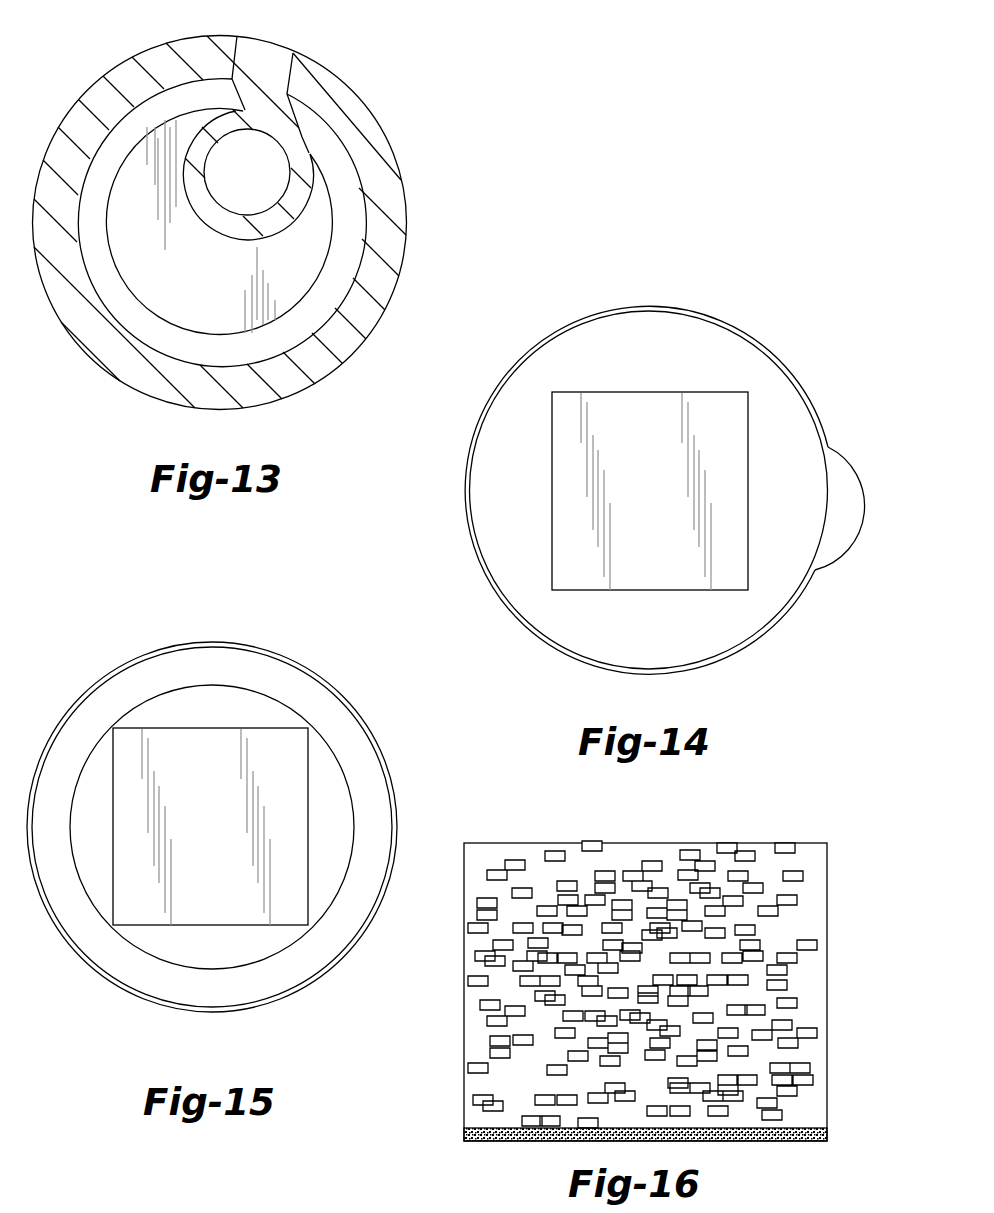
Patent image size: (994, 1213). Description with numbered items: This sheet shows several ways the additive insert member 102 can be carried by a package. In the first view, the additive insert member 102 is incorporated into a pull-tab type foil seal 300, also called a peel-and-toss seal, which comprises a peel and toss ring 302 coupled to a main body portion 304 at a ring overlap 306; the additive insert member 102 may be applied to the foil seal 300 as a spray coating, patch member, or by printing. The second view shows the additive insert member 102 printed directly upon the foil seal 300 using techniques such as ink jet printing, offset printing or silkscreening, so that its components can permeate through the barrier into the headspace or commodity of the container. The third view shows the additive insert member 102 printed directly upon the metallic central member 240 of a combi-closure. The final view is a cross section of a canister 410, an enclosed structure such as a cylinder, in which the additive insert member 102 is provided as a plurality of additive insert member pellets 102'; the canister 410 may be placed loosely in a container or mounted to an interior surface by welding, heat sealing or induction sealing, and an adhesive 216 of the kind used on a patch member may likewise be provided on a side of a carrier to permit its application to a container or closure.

In FIG. 13, the additive insert member 102 is at (292, 222).
In FIG. 14, the additive insert member 102 is at (650, 432).
In FIG. 15, the additive insert member 102 is at (210, 767).
In FIG. 16, the additive insert member pellets 102' is at (602, 992).
In FIG. 16, the adhesive 216 is at (512, 1137).
In FIG. 15, the metallic central member 240 is at (328, 682).
In FIG. 13, the pull-tab type foil seal 300 is at (381, 80).
In FIG. 14, the pull-tab type foil seal 300 is at (768, 348).
In FIG. 13, the peel and toss ring 302 is at (223, 224).
In FIG. 13, the main body portion 304 is at (405, 190).
In FIG. 13, the ring overlap 306 is at (259, 56).
In FIG. 16, the canister 410 is at (450, 1004).